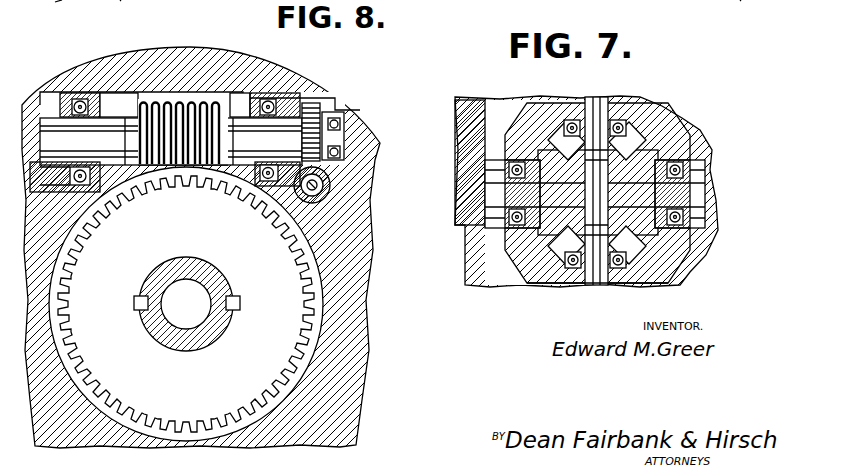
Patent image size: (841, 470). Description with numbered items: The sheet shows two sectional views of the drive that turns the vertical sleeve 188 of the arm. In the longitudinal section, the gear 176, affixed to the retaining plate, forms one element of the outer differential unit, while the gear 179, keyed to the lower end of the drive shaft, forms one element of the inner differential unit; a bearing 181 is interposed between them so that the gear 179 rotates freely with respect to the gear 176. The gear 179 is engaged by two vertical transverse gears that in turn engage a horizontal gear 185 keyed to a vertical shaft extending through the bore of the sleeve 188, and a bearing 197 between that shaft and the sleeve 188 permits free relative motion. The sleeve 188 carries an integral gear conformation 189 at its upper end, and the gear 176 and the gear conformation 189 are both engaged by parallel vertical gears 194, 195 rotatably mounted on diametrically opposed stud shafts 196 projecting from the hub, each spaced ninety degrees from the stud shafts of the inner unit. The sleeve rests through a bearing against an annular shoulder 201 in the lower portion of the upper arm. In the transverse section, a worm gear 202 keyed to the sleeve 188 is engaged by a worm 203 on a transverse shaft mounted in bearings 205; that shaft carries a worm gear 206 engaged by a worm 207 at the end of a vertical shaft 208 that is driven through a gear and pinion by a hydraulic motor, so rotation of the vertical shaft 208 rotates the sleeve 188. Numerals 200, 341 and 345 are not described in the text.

In FIG. 7, the bearing 181 is at (547, 110).
In FIG. 7, the gear 176 is at (655, 107).
In FIG. 7, the gear 179 is at (682, 140).
In FIG. 7, the vertical gear 195 is at (672, 152).
In FIG. 7, the stud shaft 196 is at (660, 193).
In FIG. 7, the horizontal gear 185 is at (683, 240).
In FIG. 7, the gear conformation 189 is at (652, 276).
In FIG. 7, the bearing 197 is at (550, 282).
In FIG. 7, the vertical gear 194 is at (518, 242).
In FIG. 7, the shaft 200 is at (730, 4).
In FIG. 8, the worm gear 202 is at (282, 333).
In FIG. 8, the bearing 205 is at (262, 190).
In FIG. 8, the vertical sleeve 188 is at (218, 290).
In FIG. 8, the annular shoulder 201 is at (110, 132).
In FIG. 8, the worm 203 is at (165, 107).
In FIG. 8, the worm gear 206 is at (318, 112).
In FIG. 8, the worm 207 is at (326, 176).
In FIG. 8, the vertical shaft 208 is at (322, 192).
In FIG. 8, the lever 341 is at (62, 1).
In FIG. 8, the link 345 is at (120, 5).